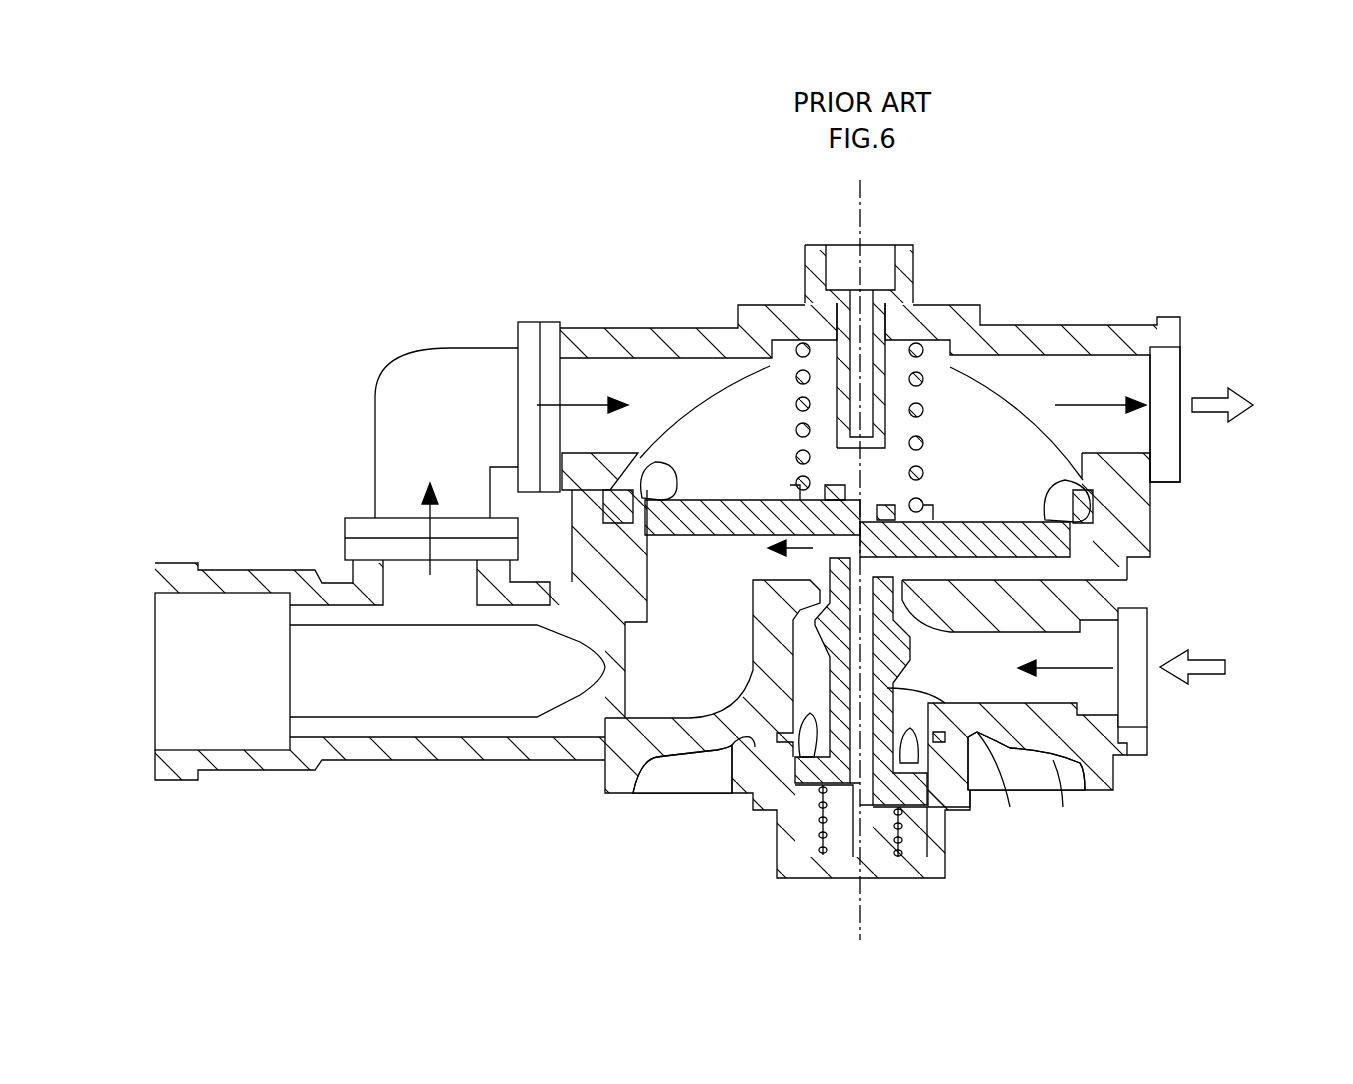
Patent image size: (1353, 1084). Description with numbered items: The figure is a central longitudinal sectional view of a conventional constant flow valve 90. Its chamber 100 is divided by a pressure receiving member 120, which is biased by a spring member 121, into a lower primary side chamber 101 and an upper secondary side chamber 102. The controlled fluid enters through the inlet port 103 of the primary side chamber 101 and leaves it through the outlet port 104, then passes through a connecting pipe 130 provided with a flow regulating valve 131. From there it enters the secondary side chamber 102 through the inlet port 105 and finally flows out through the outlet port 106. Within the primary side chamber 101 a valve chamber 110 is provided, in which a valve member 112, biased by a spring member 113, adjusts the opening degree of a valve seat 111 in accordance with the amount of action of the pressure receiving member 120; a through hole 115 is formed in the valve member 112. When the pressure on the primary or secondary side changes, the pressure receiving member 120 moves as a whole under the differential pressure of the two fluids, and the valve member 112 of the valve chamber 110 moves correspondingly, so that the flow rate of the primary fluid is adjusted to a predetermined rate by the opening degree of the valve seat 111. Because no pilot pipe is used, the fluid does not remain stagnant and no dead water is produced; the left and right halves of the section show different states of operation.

The constant flow valve 90 is at (1058, 283).
The chamber 100 is at (995, 463).
The primary side chamber 101 is at (715, 618).
The secondary side chamber 102 is at (690, 392).
The inlet port 103 is at (1133, 650).
The outlet port 104 is at (648, 675).
The inlet port 105 is at (553, 387).
The outlet port 106 is at (1168, 378).
The valve chamber 110 is at (1037, 750).
The valve seat 111 is at (902, 603).
The valve member 112 is at (973, 737).
The spring member 113 is at (825, 845).
The through hole 115 is at (865, 790).
The pressure receiving member 120 is at (678, 528).
The spring member 121 is at (922, 380).
The connecting pipe 130 is at (382, 487).
The flow regulating valve 131 is at (418, 695).